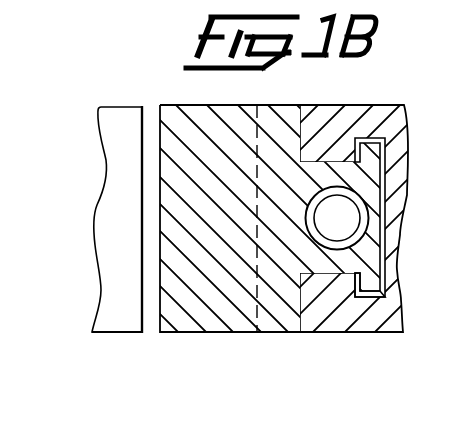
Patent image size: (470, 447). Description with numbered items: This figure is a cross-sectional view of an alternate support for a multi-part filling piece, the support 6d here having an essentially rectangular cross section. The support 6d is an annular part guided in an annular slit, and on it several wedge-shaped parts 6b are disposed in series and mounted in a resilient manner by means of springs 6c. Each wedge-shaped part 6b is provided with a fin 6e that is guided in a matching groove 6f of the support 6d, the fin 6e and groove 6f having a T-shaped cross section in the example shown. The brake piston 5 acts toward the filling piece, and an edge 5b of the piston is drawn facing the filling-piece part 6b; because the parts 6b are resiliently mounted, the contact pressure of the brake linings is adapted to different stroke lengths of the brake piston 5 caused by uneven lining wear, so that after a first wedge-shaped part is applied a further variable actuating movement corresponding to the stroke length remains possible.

The brake piston 5 is at (126, 129).
The edge of shielding plate 5b is at (153, 325).
The wedge-shaped part 6b is at (224, 313).
The spring 6c is at (364, 211).
The support 6d is at (363, 313).
The fin 6e is at (368, 169).
The groove 6f is at (376, 262).